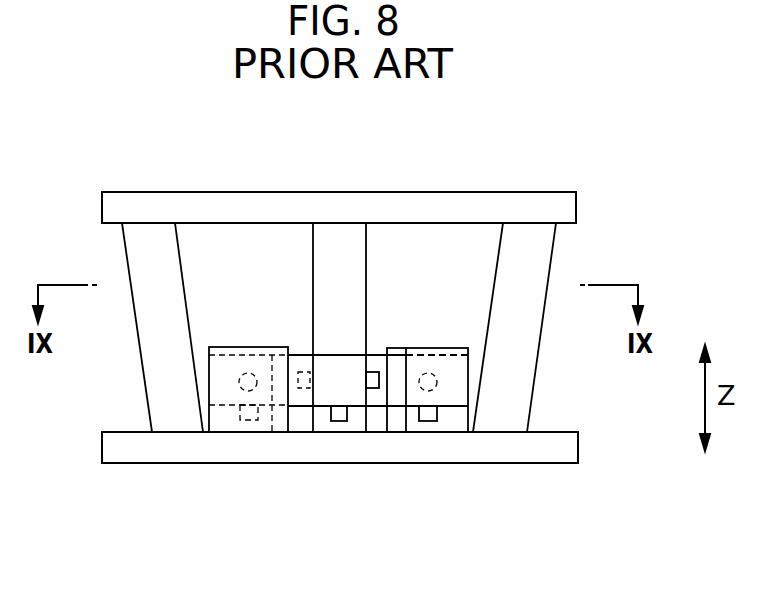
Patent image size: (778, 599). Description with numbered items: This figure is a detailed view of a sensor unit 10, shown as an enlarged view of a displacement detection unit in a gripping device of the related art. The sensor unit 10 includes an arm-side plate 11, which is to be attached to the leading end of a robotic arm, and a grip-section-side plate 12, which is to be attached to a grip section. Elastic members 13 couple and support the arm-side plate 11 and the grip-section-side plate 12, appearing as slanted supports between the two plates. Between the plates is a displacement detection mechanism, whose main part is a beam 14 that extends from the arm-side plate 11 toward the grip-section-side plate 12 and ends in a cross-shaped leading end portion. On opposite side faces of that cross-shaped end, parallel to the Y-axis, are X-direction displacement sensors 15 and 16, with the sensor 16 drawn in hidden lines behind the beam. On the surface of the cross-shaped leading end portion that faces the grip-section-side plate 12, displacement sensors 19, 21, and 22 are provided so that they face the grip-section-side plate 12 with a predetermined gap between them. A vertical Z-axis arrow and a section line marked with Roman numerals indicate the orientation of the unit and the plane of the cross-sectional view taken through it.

The sensor unit 10 is at (603, 192).
The arm-side plate 11 is at (413, 200).
The grip-section-side plate 12 is at (513, 457).
The elastic members 13 is at (517, 391).
The beam 14 is at (325, 272).
The X-direction displacement sensor 15 is at (373, 372).
The X-direction displacement sensor 16 is at (303, 388).
The displacement sensor 19 is at (430, 421).
The displacement sensor 21 is at (252, 420).
The displacement sensor 22 is at (335, 421).